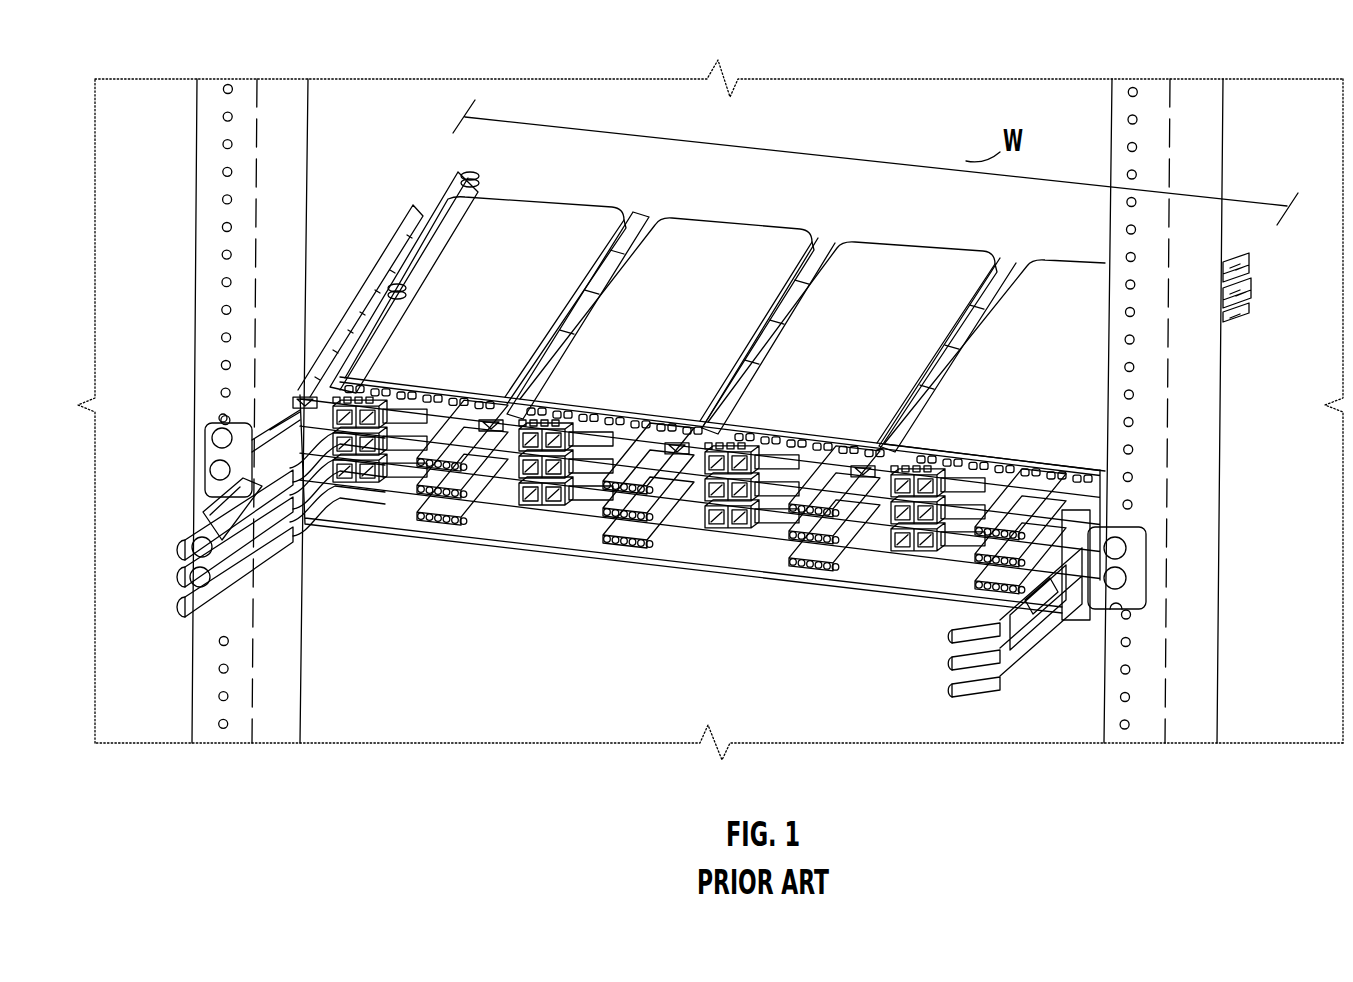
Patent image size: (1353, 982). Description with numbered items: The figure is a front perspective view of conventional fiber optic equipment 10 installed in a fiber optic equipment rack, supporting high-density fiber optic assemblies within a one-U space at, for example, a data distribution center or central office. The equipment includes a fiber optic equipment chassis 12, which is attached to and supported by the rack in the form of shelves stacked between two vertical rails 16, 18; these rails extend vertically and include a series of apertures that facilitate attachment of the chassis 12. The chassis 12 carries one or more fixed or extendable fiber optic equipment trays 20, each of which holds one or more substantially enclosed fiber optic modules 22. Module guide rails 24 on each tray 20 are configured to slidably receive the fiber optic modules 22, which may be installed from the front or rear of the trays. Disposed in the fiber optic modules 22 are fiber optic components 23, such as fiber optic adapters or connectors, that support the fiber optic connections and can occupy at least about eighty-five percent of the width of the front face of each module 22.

The fiber optic equipment 10 is at (1240, 67).
The fiber optic equipment chassis 12 is at (1240, 410).
The vertical rail 16 is at (1192, 108).
The vertical rail 18 is at (280, 108).
The fiber optic equipment tray 20 is at (370, 634).
The fiber optic module 22 is at (683, 234).
The fiber optic component 23 is at (526, 499).
The module guide rail 24 is at (530, 374).